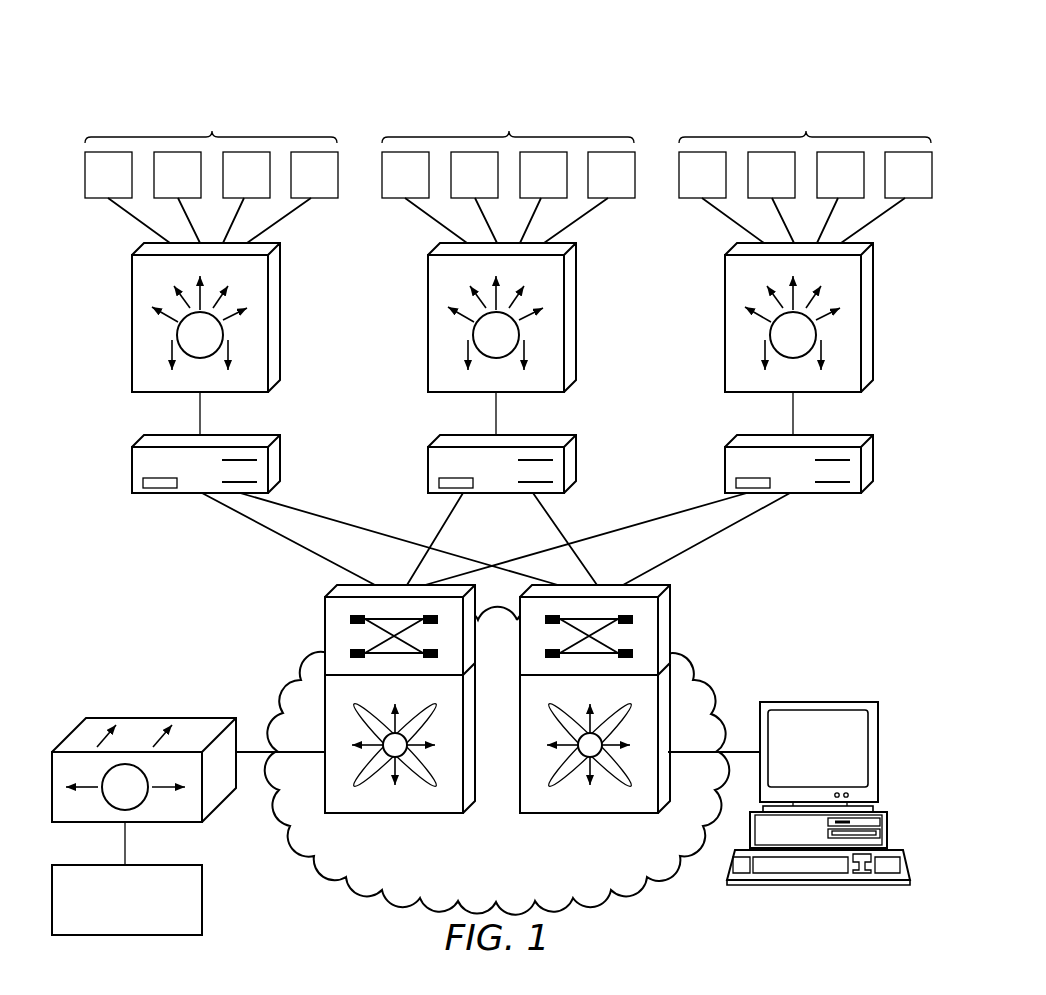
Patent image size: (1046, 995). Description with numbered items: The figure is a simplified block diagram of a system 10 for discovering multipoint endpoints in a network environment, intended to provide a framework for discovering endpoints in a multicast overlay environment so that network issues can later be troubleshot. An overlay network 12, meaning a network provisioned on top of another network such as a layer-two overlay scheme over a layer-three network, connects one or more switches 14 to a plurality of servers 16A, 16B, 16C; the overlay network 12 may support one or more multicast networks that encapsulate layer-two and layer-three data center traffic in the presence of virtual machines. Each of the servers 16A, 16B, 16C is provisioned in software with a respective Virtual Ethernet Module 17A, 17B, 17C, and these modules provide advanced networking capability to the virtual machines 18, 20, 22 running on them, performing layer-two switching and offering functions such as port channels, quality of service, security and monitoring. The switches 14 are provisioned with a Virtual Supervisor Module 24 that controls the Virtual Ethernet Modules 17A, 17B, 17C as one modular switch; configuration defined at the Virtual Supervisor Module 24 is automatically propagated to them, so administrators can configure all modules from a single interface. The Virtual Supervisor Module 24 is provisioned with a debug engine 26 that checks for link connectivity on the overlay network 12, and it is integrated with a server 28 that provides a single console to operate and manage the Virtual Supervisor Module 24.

The system 10 is at (328, 70).
The overlay network 12 is at (754, 543).
The switches 14 is at (288, 617).
The server 16A is at (132, 470).
The server 16B is at (578, 460).
The server 16C is at (874, 460).
The Virtual Ethernet Module 17A is at (132, 323).
The Virtual Ethernet Module 17B is at (578, 310).
The Virtual Ethernet Module 17C is at (874, 310).
The virtual machines 18 is at (211, 170).
The virtual machines 20 is at (508, 170).
The virtual machines 22 is at (805, 170).
The Virtual Supervisor Module 24 is at (158, 717).
The debug engine 26 is at (202, 900).
The server 28 is at (878, 752).